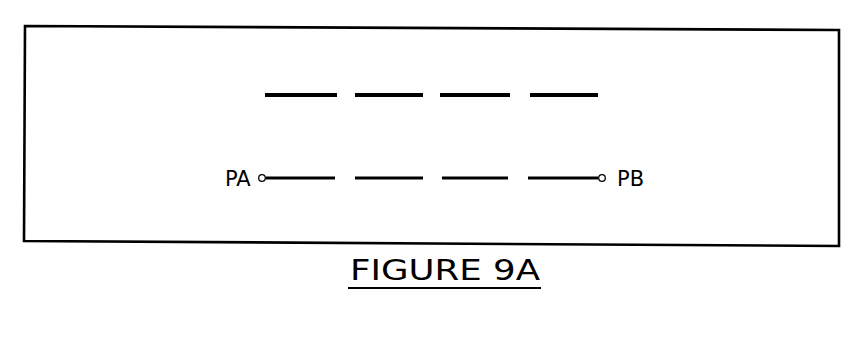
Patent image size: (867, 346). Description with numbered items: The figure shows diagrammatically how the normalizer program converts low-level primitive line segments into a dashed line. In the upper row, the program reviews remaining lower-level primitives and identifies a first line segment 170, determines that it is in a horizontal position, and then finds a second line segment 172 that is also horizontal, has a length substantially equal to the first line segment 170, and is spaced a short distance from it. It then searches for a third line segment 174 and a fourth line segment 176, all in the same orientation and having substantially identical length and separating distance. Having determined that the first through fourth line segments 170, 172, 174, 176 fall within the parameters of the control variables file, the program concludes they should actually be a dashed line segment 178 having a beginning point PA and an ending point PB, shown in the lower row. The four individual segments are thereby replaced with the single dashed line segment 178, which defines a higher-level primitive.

The first line segment 170 is at (285, 86).
The second line segment 172 is at (368, 86).
The third line segment 174 is at (466, 86).
The fourth line segment 176 is at (550, 86).
The dashed line segment 178 is at (441, 204).